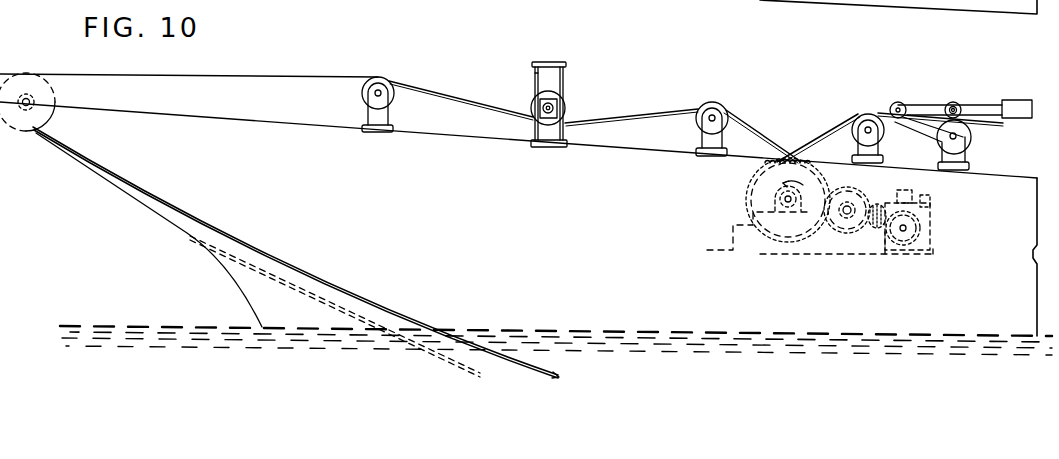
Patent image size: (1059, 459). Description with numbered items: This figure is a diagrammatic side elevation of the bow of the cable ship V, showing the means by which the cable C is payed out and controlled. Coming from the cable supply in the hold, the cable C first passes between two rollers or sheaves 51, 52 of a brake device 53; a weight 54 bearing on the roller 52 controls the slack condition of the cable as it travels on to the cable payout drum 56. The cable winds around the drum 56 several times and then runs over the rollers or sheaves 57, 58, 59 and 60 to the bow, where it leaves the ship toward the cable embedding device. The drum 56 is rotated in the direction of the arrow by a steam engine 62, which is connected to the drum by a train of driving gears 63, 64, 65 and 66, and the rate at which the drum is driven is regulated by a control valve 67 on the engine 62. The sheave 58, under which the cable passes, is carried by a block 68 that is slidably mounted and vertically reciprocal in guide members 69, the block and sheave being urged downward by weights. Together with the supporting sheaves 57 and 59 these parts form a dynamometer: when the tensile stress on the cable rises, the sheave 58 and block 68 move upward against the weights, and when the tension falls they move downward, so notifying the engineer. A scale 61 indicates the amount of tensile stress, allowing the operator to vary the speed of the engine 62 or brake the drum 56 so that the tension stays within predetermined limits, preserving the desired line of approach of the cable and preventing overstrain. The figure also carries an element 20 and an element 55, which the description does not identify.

The anchor line 20 is at (167, 220).
The cable C is at (357, 293).
The cable ship V is at (412, 155).
The roller or sheave 51 is at (967, 132).
The roller or sheave 52 is at (954, 102).
The brake device 53 is at (973, 145).
The weight 54 is at (1015, 101).
The guide pulley 55 is at (868, 120).
The cable payout drum 56 is at (767, 184).
The roller or sheave 57 is at (714, 108).
The sheave 58 is at (568, 109).
The roller or sheave 59 is at (380, 87).
The roller or sheave 60 is at (29, 76).
The scale 61 is at (563, 82).
The steam engine 62 is at (917, 252).
The driving gear 63 is at (927, 247).
The driving gear 64 is at (873, 230).
The driving gear 65 is at (846, 220).
The driving gear 66 is at (777, 240).
The control valve 67 is at (930, 212).
The block 68 is at (557, 98).
The guide members 69 is at (537, 74).